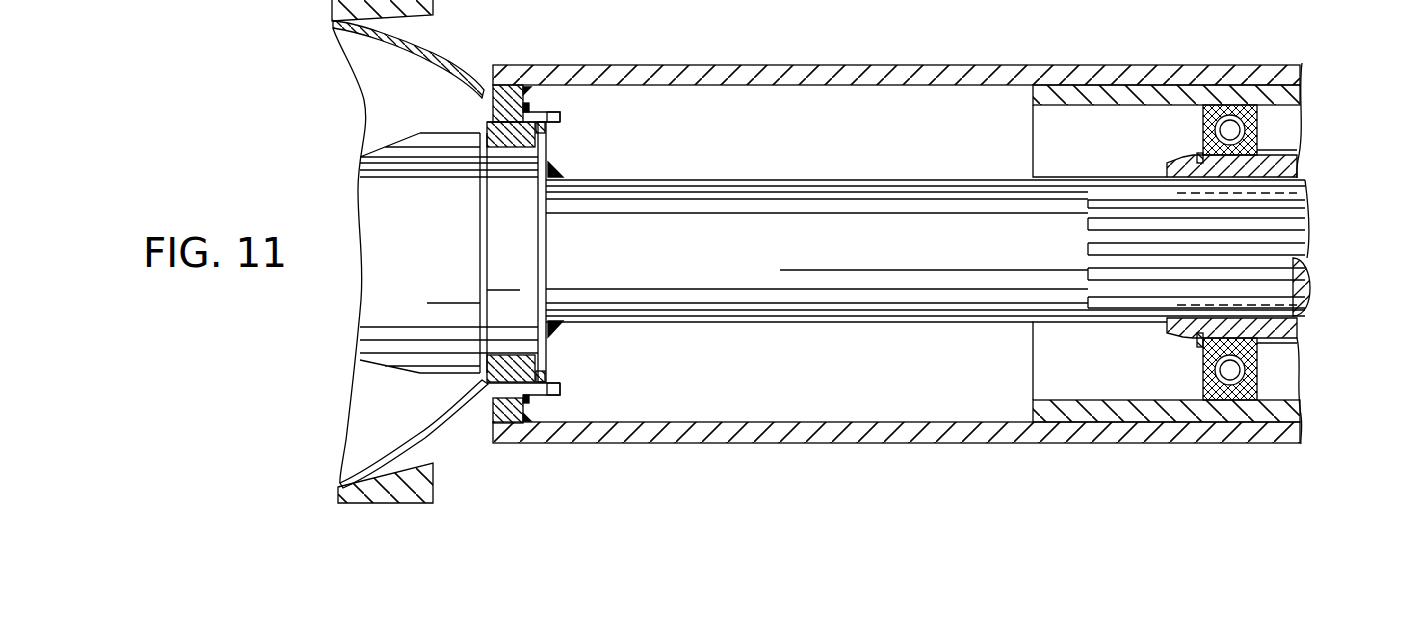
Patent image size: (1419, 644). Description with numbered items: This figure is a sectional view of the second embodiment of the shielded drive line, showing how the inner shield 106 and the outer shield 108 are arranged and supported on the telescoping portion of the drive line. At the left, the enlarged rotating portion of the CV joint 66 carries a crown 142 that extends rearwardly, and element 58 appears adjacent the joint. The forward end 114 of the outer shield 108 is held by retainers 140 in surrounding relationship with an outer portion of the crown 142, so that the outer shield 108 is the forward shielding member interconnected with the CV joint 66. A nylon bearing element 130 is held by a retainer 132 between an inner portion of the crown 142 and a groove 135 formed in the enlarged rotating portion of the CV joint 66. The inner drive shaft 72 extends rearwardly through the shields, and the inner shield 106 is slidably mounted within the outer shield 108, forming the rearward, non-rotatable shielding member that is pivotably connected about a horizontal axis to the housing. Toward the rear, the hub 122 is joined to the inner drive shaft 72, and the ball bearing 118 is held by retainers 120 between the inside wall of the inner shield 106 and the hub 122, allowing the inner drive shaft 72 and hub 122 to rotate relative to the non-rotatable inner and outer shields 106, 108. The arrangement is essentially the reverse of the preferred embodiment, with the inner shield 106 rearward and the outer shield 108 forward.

The wheel flange / hub body 58 is at (313, 251).
The CV joint 66 is at (443, 110).
The inner drive shaft 72 is at (853, 208).
The inner shield 106 is at (1148, 92).
The outer shield 108 is at (742, 70).
The forward end of the outer shield 114 is at (527, 80).
The ball bearing 118 is at (1258, 117).
The retainers 120 is at (1198, 158).
The hub 122 is at (1283, 158).
The nylon bearing element 130 is at (516, 137).
The retainer 132 is at (546, 127).
The groove 135 is at (518, 168).
The retainers 140 is at (528, 104).
The crown 142 is at (548, 116).